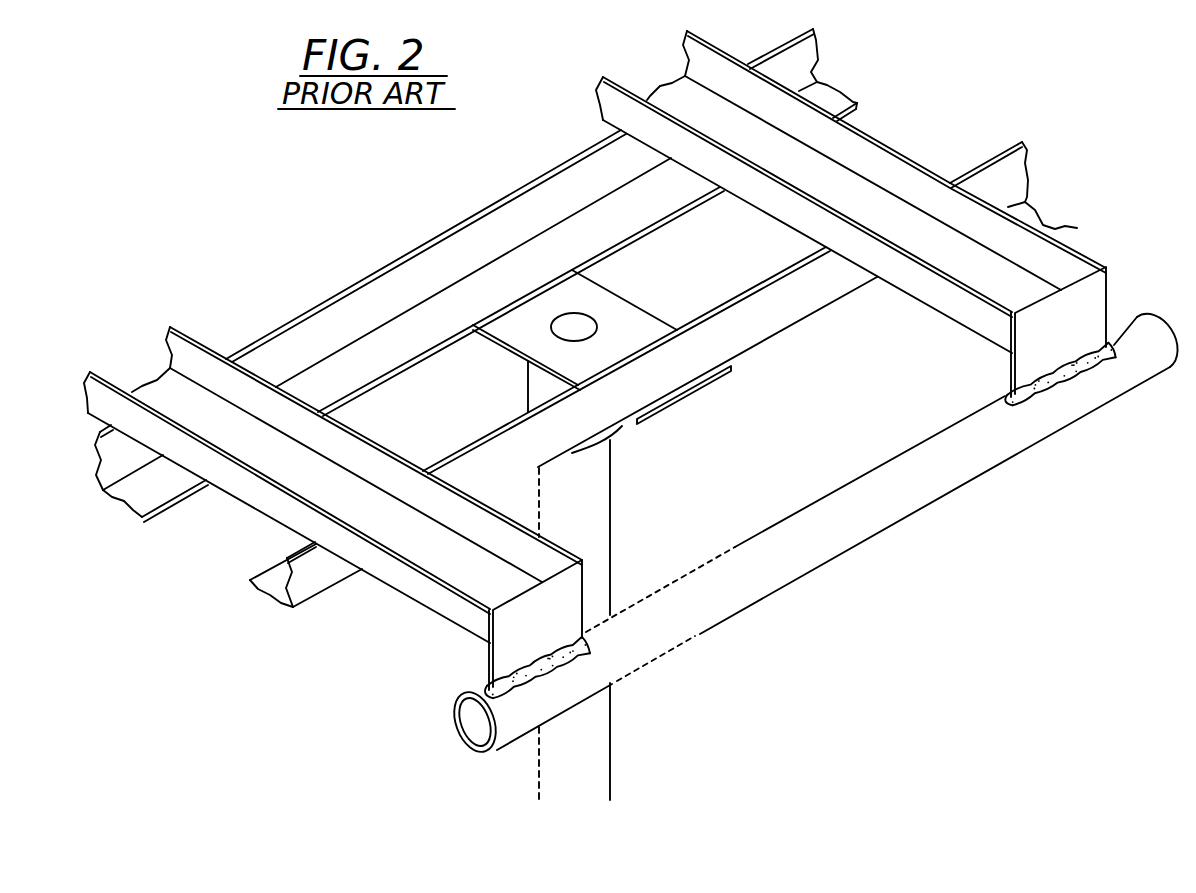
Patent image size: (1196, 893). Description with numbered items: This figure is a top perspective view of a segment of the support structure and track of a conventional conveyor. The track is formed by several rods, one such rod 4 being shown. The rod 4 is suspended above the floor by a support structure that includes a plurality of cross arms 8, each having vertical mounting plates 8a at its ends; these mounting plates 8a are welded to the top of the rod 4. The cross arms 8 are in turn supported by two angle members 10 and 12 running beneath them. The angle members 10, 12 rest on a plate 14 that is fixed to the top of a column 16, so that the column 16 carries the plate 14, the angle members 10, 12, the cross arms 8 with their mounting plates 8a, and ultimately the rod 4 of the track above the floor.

The rod 4 is at (893, 521).
The cross arm 8 is at (1044, 232).
The vertical mounting plate 8a is at (1106, 288).
The angle member 10 is at (821, 43).
The angle member 12 is at (1028, 163).
The plate 14 is at (600, 288).
The column 16 is at (612, 498).